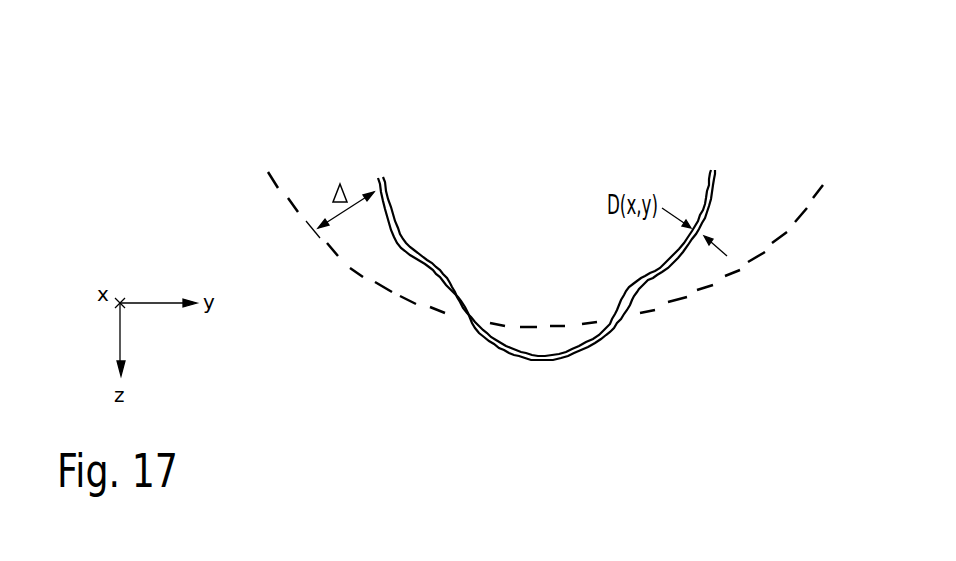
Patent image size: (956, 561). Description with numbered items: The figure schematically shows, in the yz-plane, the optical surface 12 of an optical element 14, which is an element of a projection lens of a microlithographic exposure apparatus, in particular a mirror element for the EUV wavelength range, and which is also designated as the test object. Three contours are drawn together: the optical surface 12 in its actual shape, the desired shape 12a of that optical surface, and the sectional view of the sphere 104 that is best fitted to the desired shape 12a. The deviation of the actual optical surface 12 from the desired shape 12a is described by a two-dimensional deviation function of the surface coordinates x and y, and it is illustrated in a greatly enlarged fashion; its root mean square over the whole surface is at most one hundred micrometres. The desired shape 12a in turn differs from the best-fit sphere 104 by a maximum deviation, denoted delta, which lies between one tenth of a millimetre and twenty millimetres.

The best-fit sphere 104 is at (290, 206).
The desired shape of the optical surface 12a is at (405, 228).
The optical surface 12 is at (630, 334).
The optical element 14 is at (556, 270).